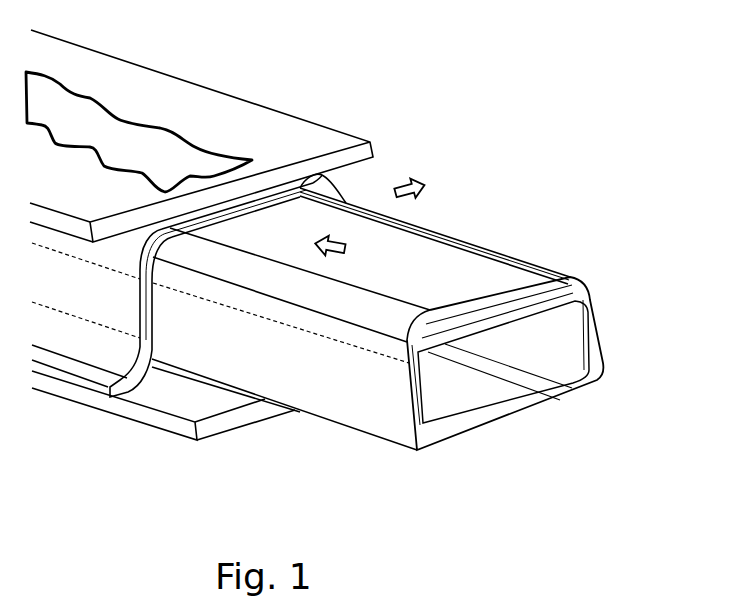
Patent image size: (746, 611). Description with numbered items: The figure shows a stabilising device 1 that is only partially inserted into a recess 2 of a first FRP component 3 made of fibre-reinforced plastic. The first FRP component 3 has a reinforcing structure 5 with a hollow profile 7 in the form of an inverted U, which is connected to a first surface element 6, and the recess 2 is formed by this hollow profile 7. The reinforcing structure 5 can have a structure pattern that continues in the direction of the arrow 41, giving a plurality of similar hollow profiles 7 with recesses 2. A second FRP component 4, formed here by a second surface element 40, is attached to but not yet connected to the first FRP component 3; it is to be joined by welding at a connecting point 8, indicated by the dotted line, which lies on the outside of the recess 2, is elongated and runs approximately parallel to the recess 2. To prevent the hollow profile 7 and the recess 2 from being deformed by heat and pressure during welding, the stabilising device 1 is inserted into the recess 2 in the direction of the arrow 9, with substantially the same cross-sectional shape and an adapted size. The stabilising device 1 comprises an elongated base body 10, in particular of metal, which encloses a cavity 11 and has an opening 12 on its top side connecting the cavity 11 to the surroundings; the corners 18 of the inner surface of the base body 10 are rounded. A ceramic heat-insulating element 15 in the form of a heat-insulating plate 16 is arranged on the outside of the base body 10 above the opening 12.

The stabilising device 1 is at (582, 242).
The recess 2 is at (179, 312).
The first FRP component 3 is at (93, 420).
The second FRP component 4 is at (276, 135).
The reinforcing structure 5 is at (70, 310).
The first surface element 6 is at (167, 397).
The hollow profile 7 is at (226, 220).
The connecting point 8 is at (125, 133).
The arrow 9 is at (335, 257).
The base body 10 is at (575, 390).
The cavity 11 is at (488, 398).
The opening 12 is at (497, 324).
The heat-insulating element 15 is at (482, 275).
The heat-insulating plate 16 is at (548, 282).
The corners 18 is at (578, 356).
The second surface element 40 is at (210, 109).
The arrow 41 is at (405, 176).